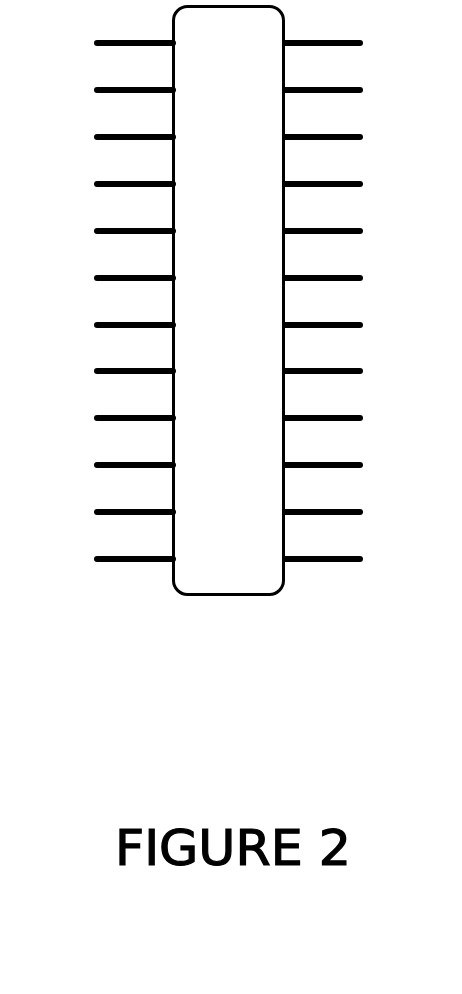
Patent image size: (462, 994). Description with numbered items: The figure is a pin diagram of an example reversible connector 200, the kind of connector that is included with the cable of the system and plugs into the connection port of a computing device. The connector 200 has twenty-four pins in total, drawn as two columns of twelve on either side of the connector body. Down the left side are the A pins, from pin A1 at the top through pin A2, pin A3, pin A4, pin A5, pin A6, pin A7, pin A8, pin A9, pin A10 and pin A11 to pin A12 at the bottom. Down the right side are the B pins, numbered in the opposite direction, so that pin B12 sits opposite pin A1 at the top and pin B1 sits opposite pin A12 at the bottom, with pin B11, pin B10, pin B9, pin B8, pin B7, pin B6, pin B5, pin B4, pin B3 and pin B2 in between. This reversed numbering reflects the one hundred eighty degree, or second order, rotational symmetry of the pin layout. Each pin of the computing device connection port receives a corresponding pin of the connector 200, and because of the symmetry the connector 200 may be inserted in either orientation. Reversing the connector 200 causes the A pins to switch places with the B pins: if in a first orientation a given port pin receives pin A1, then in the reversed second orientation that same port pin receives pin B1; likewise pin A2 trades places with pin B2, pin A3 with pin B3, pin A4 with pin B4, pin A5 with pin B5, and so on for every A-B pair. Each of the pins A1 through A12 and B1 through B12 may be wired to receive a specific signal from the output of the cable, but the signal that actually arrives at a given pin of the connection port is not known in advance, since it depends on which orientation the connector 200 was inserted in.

The reversible connector 200 is at (247, 697).
The pin A1 is at (112, 44).
The pin A2 is at (112, 91).
The pin A3 is at (112, 138).
The pin A4 is at (112, 185).
The pin A5 is at (112, 232).
The pin A6 is at (112, 279).
The pin A7 is at (112, 326).
The pin A8 is at (112, 372).
The pin A9 is at (112, 419).
The pin A10 is at (112, 466).
The pin A11 is at (112, 513).
The pin A12 is at (112, 560).
The pin B1 is at (344, 560).
The pin B2 is at (344, 513).
The pin B3 is at (344, 466).
The pin B4 is at (344, 419).
The pin B5 is at (344, 372).
The pin B6 is at (344, 326).
The pin B7 is at (344, 279).
The pin B8 is at (344, 232).
The pin B9 is at (344, 185).
The pin B10 is at (349, 138).
The pin B11 is at (349, 91).
The pin B12 is at (349, 44).